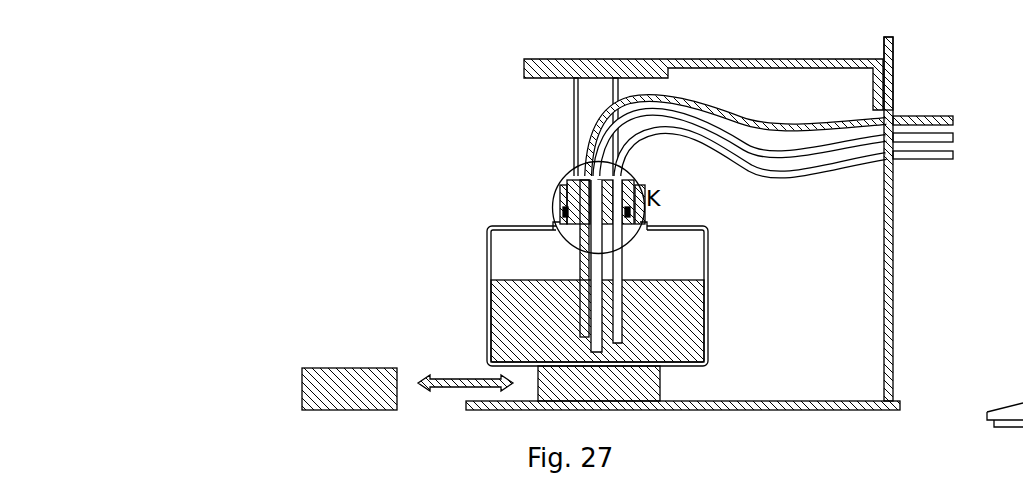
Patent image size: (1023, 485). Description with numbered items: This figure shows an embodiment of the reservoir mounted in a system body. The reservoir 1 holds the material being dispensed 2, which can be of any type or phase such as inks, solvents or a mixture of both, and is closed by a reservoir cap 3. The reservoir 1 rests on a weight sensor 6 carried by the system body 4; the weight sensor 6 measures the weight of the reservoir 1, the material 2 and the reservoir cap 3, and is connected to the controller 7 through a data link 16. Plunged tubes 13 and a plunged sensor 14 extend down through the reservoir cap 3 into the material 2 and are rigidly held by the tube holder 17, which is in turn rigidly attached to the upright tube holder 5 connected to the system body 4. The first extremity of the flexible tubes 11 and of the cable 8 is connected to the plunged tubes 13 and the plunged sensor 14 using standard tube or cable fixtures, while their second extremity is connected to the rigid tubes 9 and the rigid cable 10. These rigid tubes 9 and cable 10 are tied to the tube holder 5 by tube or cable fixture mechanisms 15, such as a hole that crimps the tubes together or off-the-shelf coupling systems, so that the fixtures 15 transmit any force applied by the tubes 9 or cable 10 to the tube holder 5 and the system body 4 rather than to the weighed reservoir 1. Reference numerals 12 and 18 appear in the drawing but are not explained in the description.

The reservoir 1 is at (487, 240).
The material contained in the reservoir 2 is at (527, 322).
The reservoir cap 3 is at (558, 195).
The system body 4 is at (820, 395).
The tube holder 5 is at (895, 320).
The weight sensor 6 is at (701, 411).
The controller 7 is at (352, 368).
The cable 8 is at (760, 122).
The rigid tubes 9 is at (935, 163).
The rigid cable 10 is at (930, 117).
The tubes 11 is at (823, 163).
The tube 12 is at (752, 173).
The plunged tubes 13 is at (591, 262).
The plunged sensor 14 is at (575, 273).
The tube or cable fixture mechanisms 15 is at (889, 158).
The data link 16 is at (455, 395).
The tube holder 17 is at (522, 68).
The post 18 is at (889, 83).